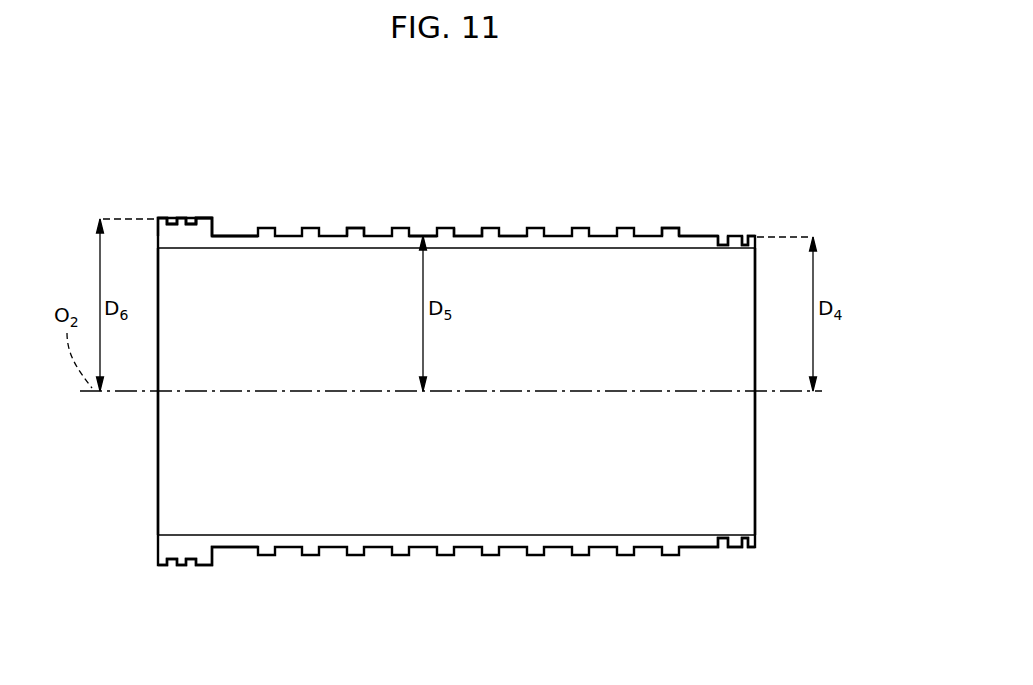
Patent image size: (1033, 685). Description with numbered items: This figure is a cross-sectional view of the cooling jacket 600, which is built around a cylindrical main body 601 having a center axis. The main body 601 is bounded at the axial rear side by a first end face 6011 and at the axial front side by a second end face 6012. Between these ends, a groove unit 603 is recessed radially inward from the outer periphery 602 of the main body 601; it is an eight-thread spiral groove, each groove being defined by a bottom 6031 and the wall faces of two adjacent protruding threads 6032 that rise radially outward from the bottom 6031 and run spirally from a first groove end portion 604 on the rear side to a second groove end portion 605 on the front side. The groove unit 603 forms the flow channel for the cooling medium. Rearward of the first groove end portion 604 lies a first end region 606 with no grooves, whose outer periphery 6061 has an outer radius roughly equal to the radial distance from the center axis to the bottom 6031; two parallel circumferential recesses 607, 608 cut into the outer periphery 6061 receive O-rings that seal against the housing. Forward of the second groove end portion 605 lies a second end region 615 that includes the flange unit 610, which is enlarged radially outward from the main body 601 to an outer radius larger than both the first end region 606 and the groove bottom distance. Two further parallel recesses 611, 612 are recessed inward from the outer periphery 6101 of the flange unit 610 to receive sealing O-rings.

The cooling jacket 600 is at (639, 132).
The main body 601 is at (530, 210).
The outer periphery 602 is at (353, 228).
The groove unit 603 is at (428, 222).
The bottom 6031 is at (417, 236).
The protruding thread 6032 is at (493, 228).
The first groove end portion 604 is at (683, 228).
The second groove end portion 605 is at (244, 236).
The first end region 606 is at (755, 562).
The outer periphery of first end region 6061 is at (705, 237).
The recess 607 is at (726, 237).
The recess 608 is at (746, 237).
The flange unit 610 is at (148, 200).
The recess 611 is at (172, 218).
The outer periphery of flange unit 6101 is at (200, 218).
The recess 612 is at (190, 218).
The second end region 615 is at (255, 568).
The first end face 6011 is at (756, 342).
The second end face 6012 is at (157, 312).